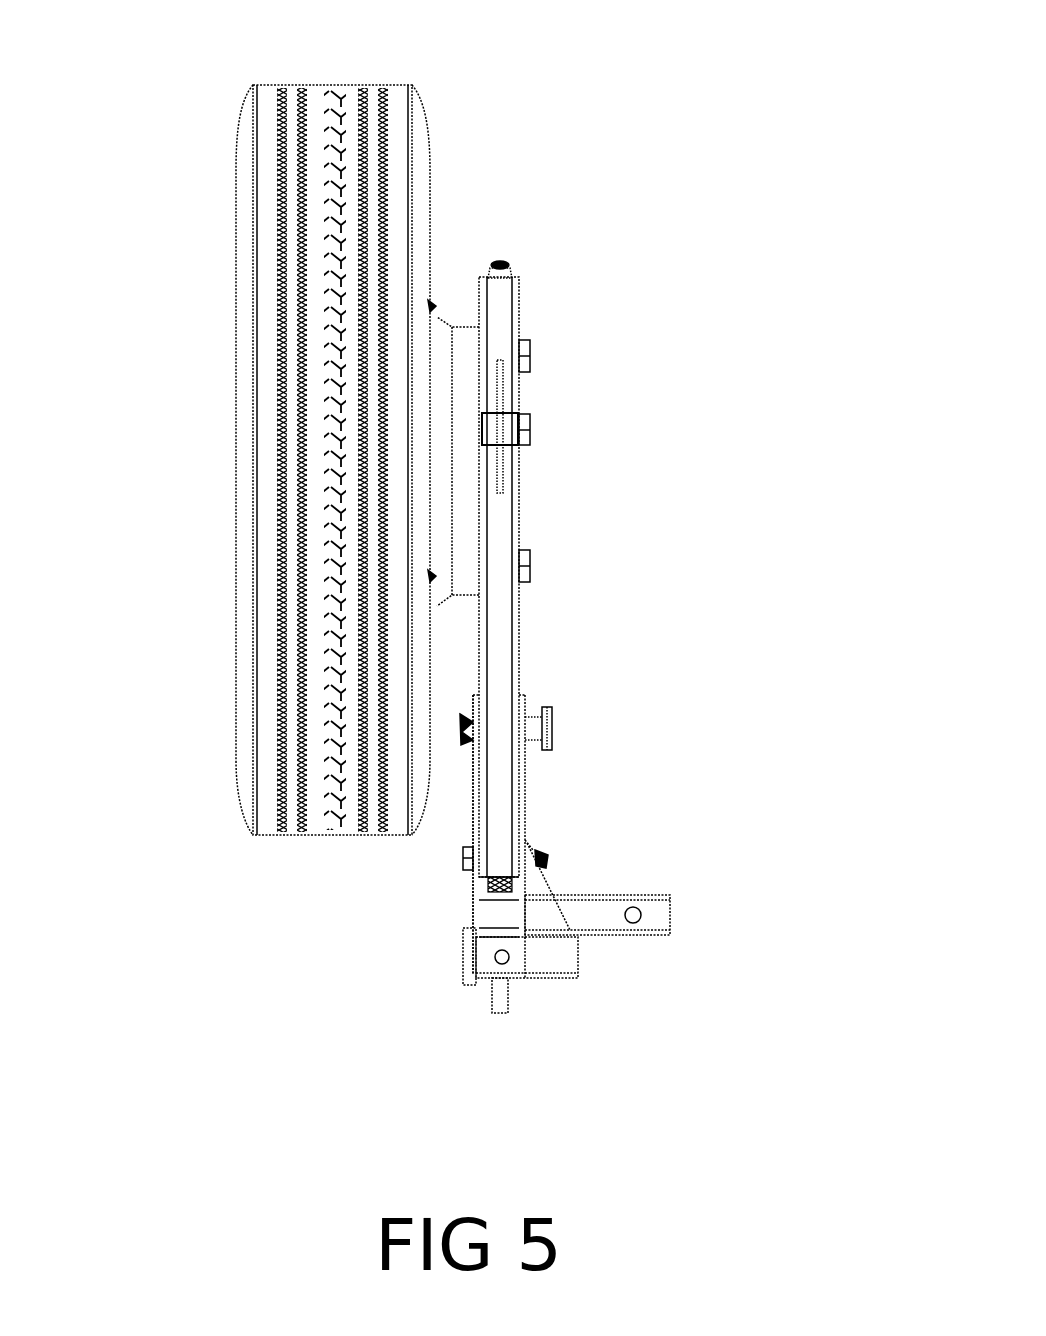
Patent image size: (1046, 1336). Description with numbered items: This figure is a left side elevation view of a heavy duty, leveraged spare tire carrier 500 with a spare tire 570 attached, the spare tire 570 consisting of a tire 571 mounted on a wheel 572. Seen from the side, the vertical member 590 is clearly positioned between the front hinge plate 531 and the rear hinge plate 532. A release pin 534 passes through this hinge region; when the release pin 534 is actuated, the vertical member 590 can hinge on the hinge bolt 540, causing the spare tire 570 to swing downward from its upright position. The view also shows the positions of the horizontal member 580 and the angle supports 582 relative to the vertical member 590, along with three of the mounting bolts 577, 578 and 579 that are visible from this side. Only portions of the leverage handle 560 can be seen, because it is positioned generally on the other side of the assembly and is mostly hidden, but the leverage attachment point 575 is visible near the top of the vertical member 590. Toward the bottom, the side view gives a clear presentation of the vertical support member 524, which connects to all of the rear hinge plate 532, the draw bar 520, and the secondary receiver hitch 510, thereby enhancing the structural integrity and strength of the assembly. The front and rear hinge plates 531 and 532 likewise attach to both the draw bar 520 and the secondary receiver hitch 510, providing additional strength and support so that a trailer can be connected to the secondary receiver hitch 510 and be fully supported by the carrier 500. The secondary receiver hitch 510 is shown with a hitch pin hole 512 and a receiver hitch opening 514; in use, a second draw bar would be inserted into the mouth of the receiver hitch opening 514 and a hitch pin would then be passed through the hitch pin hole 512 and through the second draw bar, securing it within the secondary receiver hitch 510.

The leveraged spare tire carrier 500 is at (232, 1115).
The secondary receiver hitch 510 is at (553, 965).
The hitch pin hole 512 is at (497, 962).
The receiver hitch opening 514 is at (435, 960).
The draw bar 520 is at (663, 921).
The vertical support member 524 is at (535, 905).
The front hinge plate 531 is at (470, 800).
The rear hinge plate 532 is at (525, 783).
The release pin 534 is at (553, 732).
The hinge bolt 540 is at (468, 862).
The leverage handle 560 is at (500, 1015).
The spare tire 570 is at (190, 410).
The tire 571 is at (253, 87).
The wheel 572 is at (440, 318).
The leverage attachment point 575 is at (499, 262).
The mounting bolt 577 is at (528, 338).
The mounting bolt 578 is at (530, 425).
The mounting bolt 579 is at (530, 558).
The horizontal member 580 is at (520, 445).
The angle supports 582 is at (500, 395).
The vertical member 590 is at (500, 628).